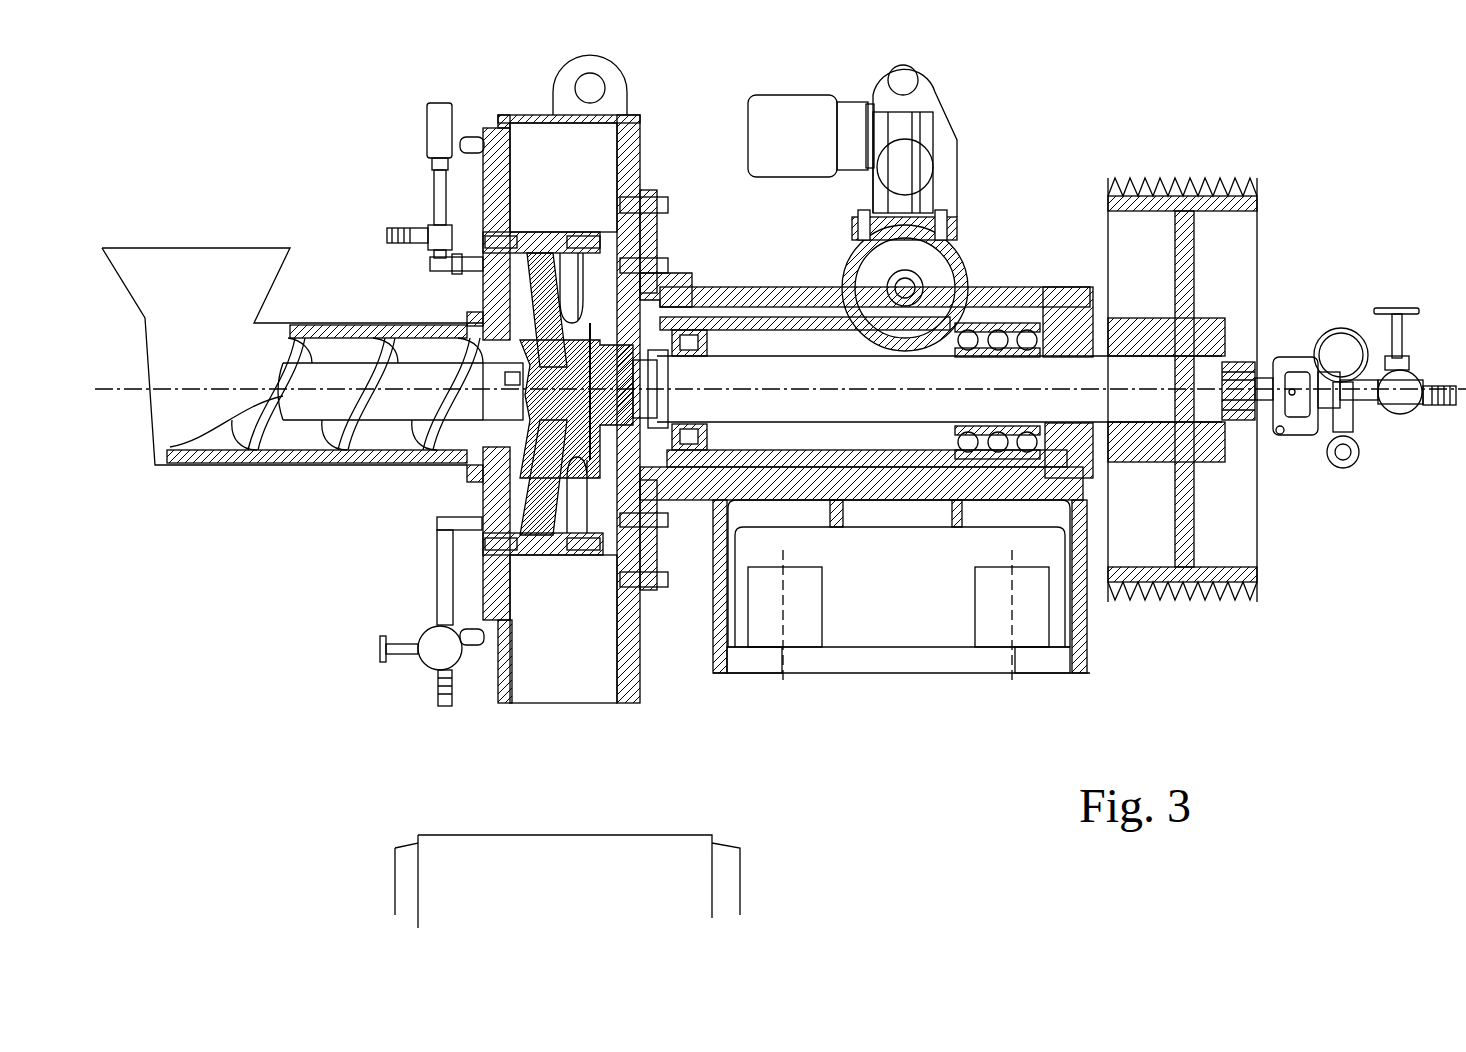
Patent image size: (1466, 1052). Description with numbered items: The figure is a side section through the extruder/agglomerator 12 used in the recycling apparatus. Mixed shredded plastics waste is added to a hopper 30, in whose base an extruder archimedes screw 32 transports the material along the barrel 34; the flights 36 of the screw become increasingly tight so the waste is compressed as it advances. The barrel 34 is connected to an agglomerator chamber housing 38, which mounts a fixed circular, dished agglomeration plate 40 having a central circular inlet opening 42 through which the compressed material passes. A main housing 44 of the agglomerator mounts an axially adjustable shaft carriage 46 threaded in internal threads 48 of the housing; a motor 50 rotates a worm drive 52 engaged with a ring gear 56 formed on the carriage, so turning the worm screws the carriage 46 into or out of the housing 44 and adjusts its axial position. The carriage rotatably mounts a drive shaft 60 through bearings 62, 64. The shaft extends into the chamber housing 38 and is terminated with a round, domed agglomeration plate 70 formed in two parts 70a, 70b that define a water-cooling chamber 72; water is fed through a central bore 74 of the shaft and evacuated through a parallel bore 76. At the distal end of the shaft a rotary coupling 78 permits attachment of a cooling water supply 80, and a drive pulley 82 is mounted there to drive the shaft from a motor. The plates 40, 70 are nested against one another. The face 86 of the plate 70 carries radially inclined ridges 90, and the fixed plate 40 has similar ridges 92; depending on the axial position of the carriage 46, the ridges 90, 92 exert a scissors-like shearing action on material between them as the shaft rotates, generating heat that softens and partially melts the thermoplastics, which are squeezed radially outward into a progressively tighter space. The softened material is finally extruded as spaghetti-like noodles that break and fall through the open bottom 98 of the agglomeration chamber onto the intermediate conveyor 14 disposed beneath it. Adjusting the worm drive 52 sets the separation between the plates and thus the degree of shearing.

The extruder/agglomerator 12 is at (1084, 97).
The intermediate conveyor 14 is at (680, 855).
The hopper 30 is at (192, 262).
The extruder archimedes screw 32 is at (300, 407).
The barrel 34 is at (305, 449).
The flights 36 is at (313, 348).
The agglomerator chamber housing 38 is at (487, 126).
The agglomeration plate 40 is at (528, 228).
The inlet opening 42 is at (470, 348).
The main housing 44 is at (768, 296).
The shaft carriage 46 is at (700, 318).
The internal threads 48 is at (800, 300).
The motor 50 is at (800, 96).
The worm drive 52 is at (922, 275).
The ring gear 56 is at (905, 500).
The drive shaft 60 is at (805, 417).
The bearing 62 is at (695, 360).
The bearing 64 is at (998, 358).
The agglomeration plate 70 is at (565, 240).
The plate part 70a is at (558, 558).
The plate part 70b is at (588, 557).
The water-cooling chamber 72 is at (590, 235).
The central bore 74 is at (690, 392).
The parallel bore 76 is at (666, 500).
The rotary coupling 78 is at (1298, 355).
The cooling water supply 80 is at (1427, 322).
The drive pulley 82 is at (1222, 190).
The face 86 is at (452, 505).
The ridges 90 is at (478, 482).
The ridges 92 is at (480, 288).
The open bottom 98 is at (512, 690).